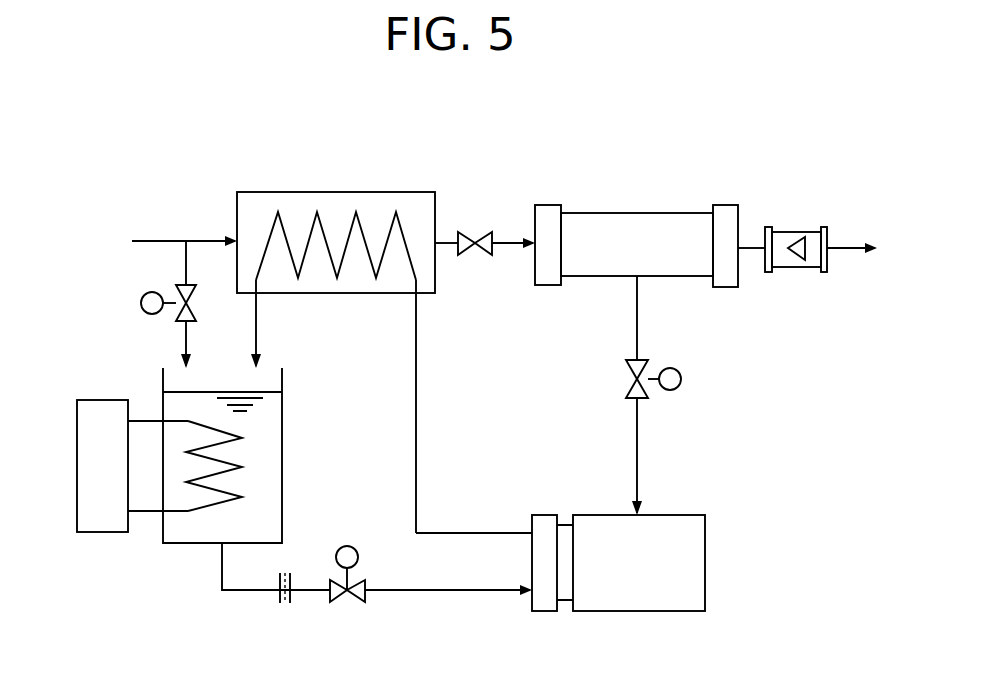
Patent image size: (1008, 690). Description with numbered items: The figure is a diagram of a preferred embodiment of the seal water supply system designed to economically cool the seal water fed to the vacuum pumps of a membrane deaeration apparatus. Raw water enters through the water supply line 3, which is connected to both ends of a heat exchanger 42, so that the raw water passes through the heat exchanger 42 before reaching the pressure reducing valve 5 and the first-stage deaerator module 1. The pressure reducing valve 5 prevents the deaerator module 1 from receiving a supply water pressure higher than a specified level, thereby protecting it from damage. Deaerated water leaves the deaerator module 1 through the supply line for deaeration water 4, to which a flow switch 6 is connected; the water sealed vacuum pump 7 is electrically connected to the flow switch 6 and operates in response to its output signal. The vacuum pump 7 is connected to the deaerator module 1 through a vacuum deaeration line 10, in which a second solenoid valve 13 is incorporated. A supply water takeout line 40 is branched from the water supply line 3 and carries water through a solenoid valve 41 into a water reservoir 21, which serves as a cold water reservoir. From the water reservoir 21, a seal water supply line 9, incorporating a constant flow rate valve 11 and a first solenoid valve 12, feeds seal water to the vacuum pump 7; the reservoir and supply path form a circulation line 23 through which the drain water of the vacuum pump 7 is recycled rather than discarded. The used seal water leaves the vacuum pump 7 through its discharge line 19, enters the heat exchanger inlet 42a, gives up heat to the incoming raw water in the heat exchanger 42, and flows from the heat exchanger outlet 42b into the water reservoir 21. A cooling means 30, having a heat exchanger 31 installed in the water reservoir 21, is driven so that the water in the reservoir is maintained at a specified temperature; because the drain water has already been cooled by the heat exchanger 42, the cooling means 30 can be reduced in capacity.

The first-stage deaerator module 1 is at (641, 212).
The water supply line 3 is at (165, 241).
The supply line for deaeration water 4 is at (843, 248).
The pressure reducing valve 5 is at (475, 232).
The flow switch 6 is at (795, 232).
The water sealed vacuum pump 7 is at (651, 616).
The seal water supply line 9 is at (466, 590).
The vacuum deaeration line 10 is at (637, 312).
The constant flow rate valve 11 is at (285, 605).
The first solenoid valve 12 is at (355, 600).
The second solenoid valve 13 is at (682, 379).
The discharge line 19 is at (470, 533).
The water reservoir 21 is at (282, 425).
The circulation line 23 is at (400, 583).
The cooling means 30 is at (101, 398).
The heat exchanger 31 is at (185, 512).
The supply water takeout line 40 is at (186, 270).
The solenoid valve 41 is at (141, 303).
The heat exchanger 42 is at (310, 190).
The heat exchanger inlet 42a is at (417, 372).
The heat exchanger outlet 42b is at (256, 322).